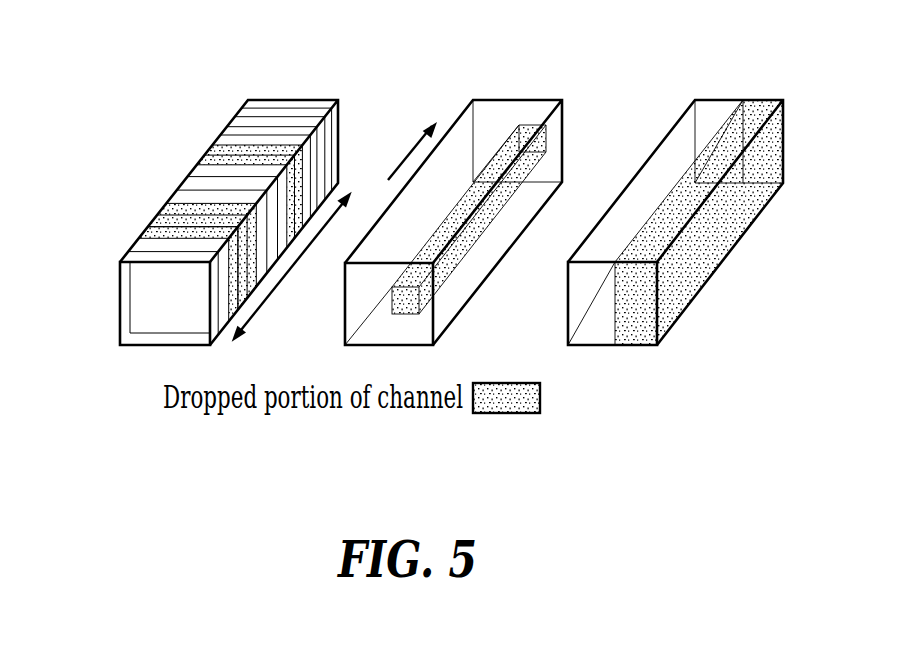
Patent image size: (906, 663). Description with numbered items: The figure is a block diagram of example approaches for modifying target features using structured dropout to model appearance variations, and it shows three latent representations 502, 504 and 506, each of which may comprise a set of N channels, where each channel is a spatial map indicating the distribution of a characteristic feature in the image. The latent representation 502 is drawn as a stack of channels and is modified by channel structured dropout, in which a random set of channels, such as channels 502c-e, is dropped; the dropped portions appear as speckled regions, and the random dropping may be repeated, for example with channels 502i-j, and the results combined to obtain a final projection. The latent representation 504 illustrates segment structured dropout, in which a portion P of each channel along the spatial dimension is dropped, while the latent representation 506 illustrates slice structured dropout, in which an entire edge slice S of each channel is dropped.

The latent representation 502 is at (104, 118).
The channels 502c-e is at (163, 198).
The channels 502i-j is at (207, 139).
The latent representation 504 is at (455, 90).
The latent representation 506 is at (652, 120).